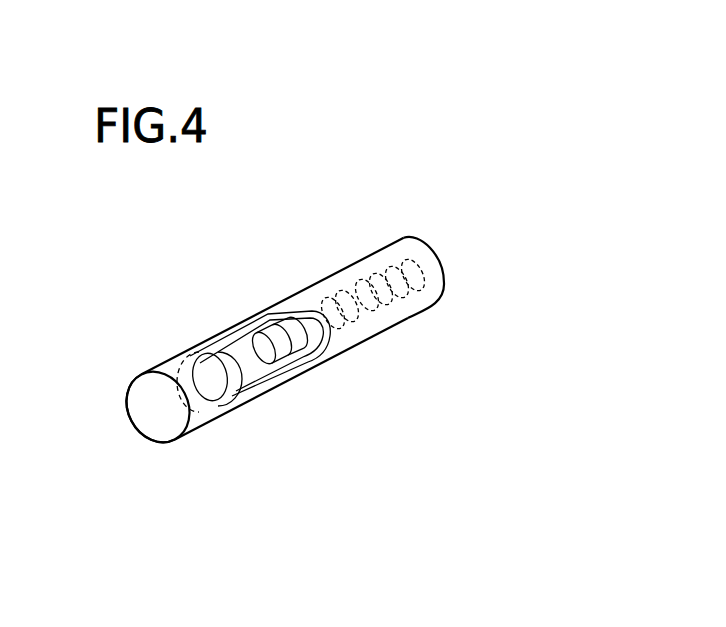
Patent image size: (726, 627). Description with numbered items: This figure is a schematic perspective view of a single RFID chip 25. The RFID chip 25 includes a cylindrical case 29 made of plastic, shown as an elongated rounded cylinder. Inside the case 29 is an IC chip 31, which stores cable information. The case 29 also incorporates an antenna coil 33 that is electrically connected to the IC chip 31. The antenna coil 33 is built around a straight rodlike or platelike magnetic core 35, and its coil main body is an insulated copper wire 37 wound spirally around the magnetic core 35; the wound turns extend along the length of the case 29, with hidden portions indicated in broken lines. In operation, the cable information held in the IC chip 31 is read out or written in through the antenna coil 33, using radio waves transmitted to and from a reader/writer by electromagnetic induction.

The RFID chip 25 is at (363, 251).
The cylindrical case 29 is at (138, 381).
The IC chip 31 is at (238, 374).
The antenna coil 33 is at (285, 314).
The magnetic core 35 is at (256, 344).
The insulated copper wire 37 is at (310, 316).